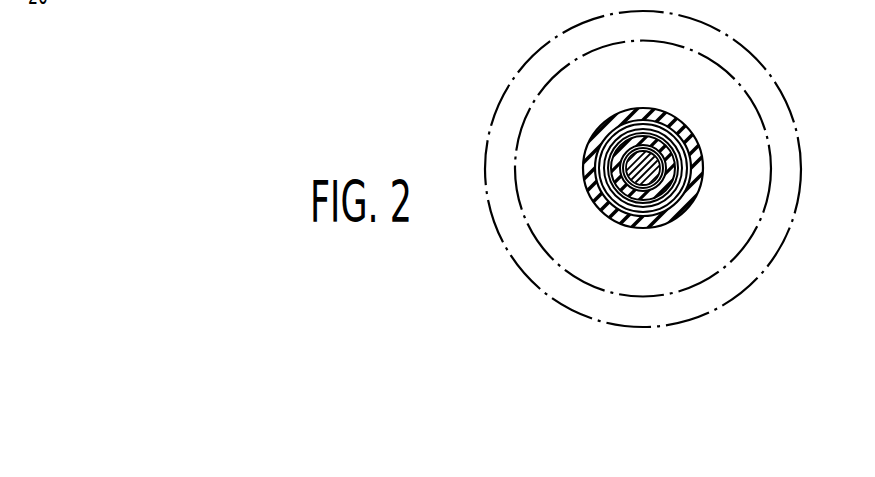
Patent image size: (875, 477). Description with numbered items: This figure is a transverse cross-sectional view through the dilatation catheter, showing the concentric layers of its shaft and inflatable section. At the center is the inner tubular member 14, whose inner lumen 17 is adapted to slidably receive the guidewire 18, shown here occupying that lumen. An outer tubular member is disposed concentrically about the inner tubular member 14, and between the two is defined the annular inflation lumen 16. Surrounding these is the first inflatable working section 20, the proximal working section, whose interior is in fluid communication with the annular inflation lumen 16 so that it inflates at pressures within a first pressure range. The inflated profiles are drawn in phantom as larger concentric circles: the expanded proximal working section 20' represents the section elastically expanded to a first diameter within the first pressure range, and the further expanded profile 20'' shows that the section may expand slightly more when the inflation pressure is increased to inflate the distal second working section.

The inner tubular member 14 is at (622, 176).
The annular inflation lumen 16 is at (662, 207).
The inner lumen 17 is at (655, 166).
The guidewire 18 is at (625, 135).
The first inflatable working section 20 is at (652, 162).
The expanded proximal working section 20' is at (684, 169).
The further expanded proximal working section 20'' is at (649, 169).